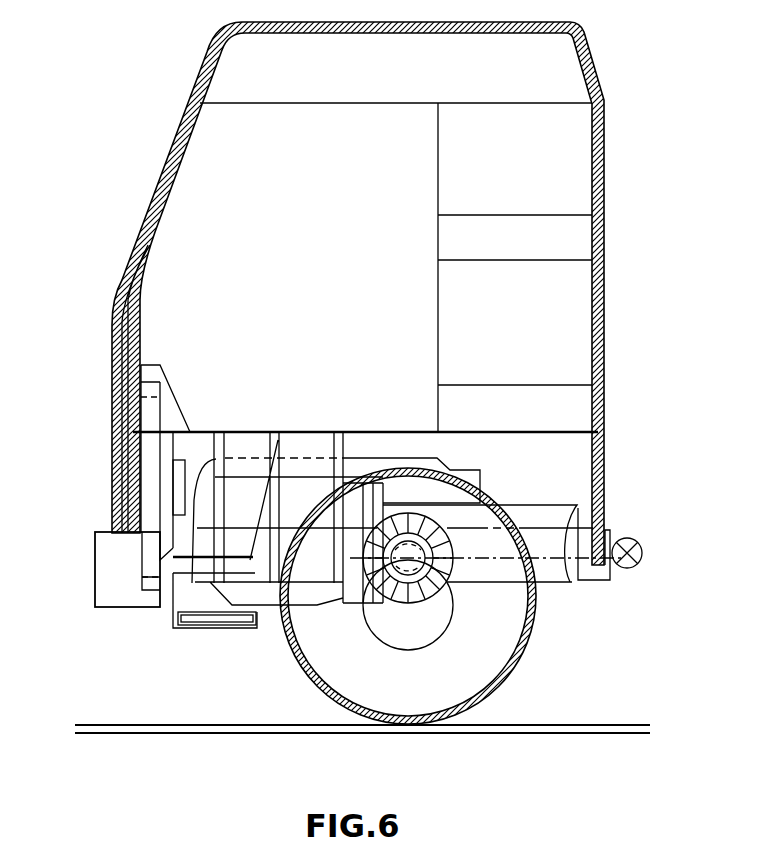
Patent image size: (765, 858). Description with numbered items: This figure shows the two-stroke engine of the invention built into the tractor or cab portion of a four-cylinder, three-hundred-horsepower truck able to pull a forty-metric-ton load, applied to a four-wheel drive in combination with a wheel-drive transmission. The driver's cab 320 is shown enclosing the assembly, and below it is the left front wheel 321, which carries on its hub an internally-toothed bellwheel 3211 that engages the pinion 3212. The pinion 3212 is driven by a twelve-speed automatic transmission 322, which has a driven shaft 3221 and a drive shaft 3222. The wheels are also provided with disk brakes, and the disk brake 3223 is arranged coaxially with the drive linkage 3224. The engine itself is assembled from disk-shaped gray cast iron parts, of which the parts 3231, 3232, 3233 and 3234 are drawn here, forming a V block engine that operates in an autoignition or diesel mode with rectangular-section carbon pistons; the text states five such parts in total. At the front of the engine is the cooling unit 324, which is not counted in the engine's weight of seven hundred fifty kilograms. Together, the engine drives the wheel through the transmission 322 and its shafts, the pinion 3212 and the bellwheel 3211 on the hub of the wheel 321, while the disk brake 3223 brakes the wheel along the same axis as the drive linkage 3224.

The driver's cab 320 is at (228, 145).
The left front wheel 321 is at (517, 676).
The internally-toothed bellwheel 3211 is at (407, 650).
The pinion 3212 is at (410, 590).
The 12-speed automatic transmission 322 is at (520, 505).
The driven shaft 3221 is at (578, 507).
The drive shaft 3222 is at (547, 560).
The disk brake 3223 is at (367, 575).
The drive linkage 3224 is at (405, 540).
The disk-shaped gray cast iron part 3231 is at (214, 440).
The disk-shaped gray cast iron part 3232 is at (240, 446).
The disk-shaped gray cast iron part 3233 is at (278, 440).
The disk-shaped gray cast iron part 3234 is at (307, 448).
The cooling unit 324 is at (147, 458).